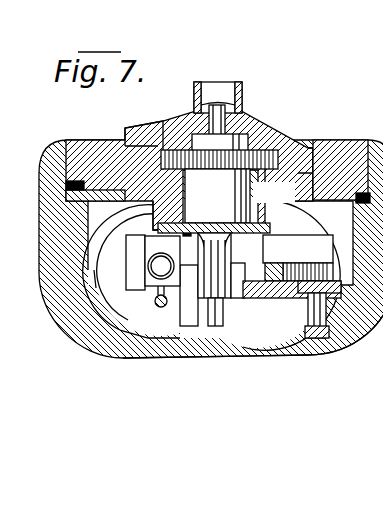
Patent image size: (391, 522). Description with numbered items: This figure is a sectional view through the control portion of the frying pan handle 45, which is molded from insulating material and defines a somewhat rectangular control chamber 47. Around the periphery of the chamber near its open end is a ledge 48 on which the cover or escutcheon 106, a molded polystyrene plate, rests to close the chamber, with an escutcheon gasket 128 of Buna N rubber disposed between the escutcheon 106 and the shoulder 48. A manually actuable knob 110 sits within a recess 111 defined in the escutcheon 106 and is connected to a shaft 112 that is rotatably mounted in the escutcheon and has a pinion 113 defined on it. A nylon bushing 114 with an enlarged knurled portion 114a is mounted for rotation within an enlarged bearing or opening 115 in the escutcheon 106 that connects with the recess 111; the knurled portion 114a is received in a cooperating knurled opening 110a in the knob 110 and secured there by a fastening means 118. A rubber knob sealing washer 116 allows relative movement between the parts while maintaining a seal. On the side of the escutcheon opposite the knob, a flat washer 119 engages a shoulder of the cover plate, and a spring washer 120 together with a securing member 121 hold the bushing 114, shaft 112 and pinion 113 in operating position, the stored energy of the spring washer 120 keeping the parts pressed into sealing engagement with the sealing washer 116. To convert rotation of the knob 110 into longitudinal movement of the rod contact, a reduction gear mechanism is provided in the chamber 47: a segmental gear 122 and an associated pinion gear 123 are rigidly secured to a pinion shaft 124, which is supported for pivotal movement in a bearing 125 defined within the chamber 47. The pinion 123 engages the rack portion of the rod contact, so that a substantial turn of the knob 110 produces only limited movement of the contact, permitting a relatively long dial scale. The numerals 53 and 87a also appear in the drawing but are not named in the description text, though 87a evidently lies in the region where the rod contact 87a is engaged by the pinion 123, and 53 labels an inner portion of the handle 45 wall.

The handle 45 is at (123, 348).
The control chamber 47 is at (88, 291).
The ledge 48 is at (352, 192).
The bore wall 53 is at (123, 297).
The gear 87a is at (284, 242).
The escutcheon 106 is at (343, 137).
The knob 110 is at (243, 110).
The opening 110a is at (270, 128).
The recess 111 is at (305, 140).
The shaft 112 is at (183, 305).
The pinion 113 is at (108, 350).
The nylon bushing 114 is at (215, 206).
The knurled portion 114a is at (147, 145).
The opening 115 is at (240, 190).
The knob sealing washer 116 is at (174, 169).
The fastening means 118 is at (207, 100).
The flat washer 119 is at (157, 225).
The spring washer 120 is at (117, 242).
The securing member 121 is at (296, 200).
The segmental gear 122 is at (247, 334).
The pinion gear 123 is at (312, 337).
The pinion shaft 124 is at (293, 328).
The bearing 125 is at (275, 320).
The escutcheon gasket 128 is at (70, 172).